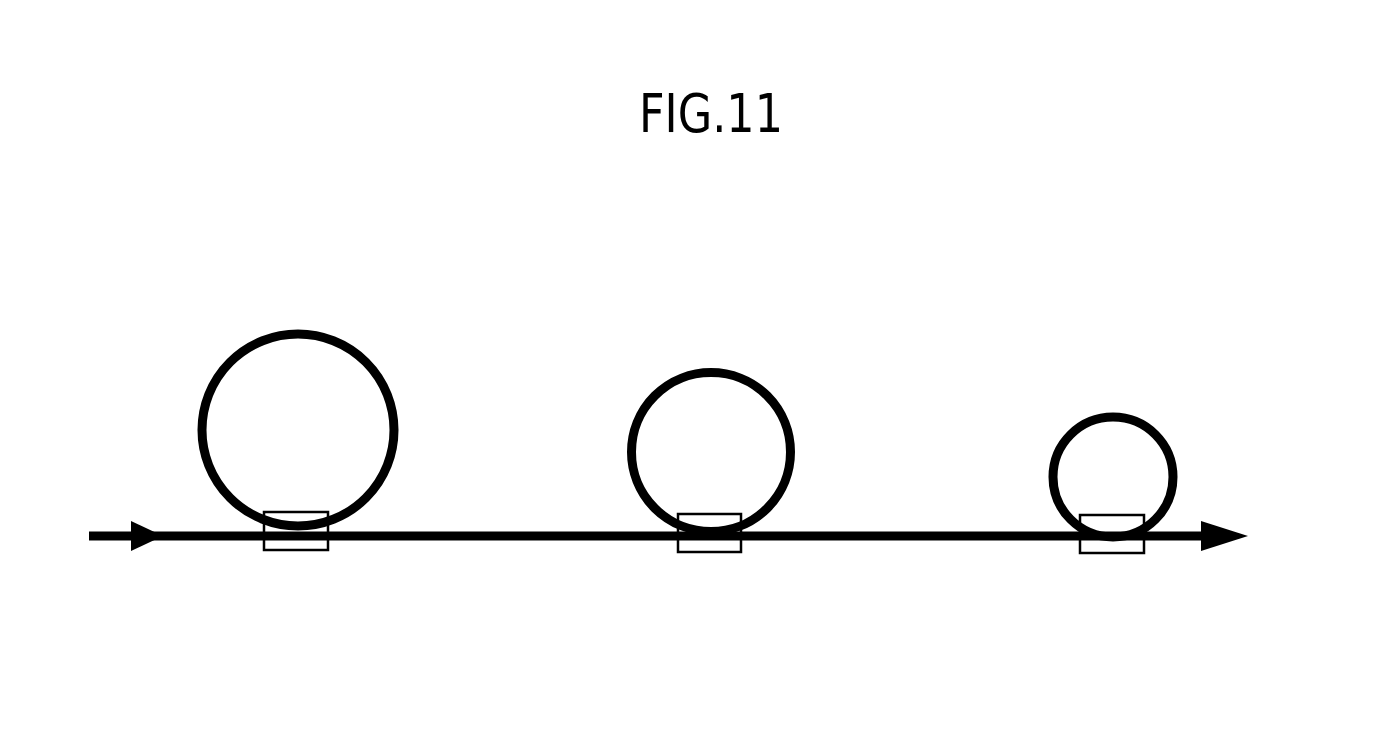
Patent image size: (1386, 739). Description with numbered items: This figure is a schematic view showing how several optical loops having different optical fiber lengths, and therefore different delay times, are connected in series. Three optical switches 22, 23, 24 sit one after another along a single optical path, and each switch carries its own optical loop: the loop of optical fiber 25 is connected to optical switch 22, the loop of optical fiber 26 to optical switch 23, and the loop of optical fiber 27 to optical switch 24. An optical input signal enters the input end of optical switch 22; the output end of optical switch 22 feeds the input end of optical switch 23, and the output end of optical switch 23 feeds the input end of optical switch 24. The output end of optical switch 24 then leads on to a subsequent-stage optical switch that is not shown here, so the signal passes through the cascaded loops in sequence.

The optical switch 22 is at (292, 550).
The optical switch 23 is at (697, 553).
The optical switch 24 is at (1100, 553).
The optical fiber 25 is at (302, 330).
The optical fiber 26 is at (727, 368).
The optical fiber 27 is at (1136, 413).